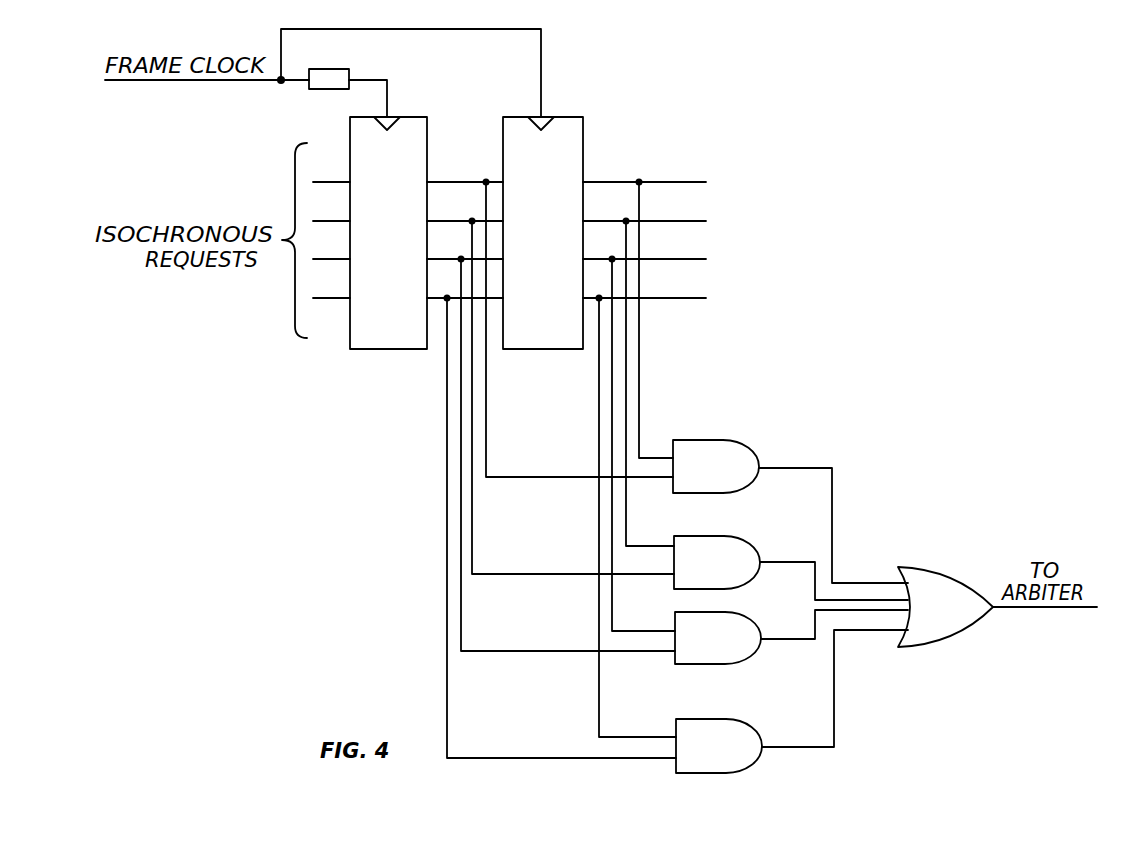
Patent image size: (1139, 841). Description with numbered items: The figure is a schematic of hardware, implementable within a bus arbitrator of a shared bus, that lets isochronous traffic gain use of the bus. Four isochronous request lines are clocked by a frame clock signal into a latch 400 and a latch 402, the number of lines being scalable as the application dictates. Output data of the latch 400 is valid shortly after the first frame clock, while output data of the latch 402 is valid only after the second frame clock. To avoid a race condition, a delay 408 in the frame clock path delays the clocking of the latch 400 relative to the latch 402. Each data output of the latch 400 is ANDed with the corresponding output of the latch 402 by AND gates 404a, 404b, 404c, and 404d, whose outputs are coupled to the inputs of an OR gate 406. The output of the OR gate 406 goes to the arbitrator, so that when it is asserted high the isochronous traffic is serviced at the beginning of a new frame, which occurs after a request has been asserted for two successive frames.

The latch 400 is at (403, 117).
The latch 402 is at (562, 117).
The AND gate 404a is at (700, 440).
The AND gate 404b is at (700, 536).
The AND gate 404c is at (700, 664).
The AND gate 404d is at (700, 719).
The OR gate 406 is at (945, 634).
The delay 408 is at (330, 69).